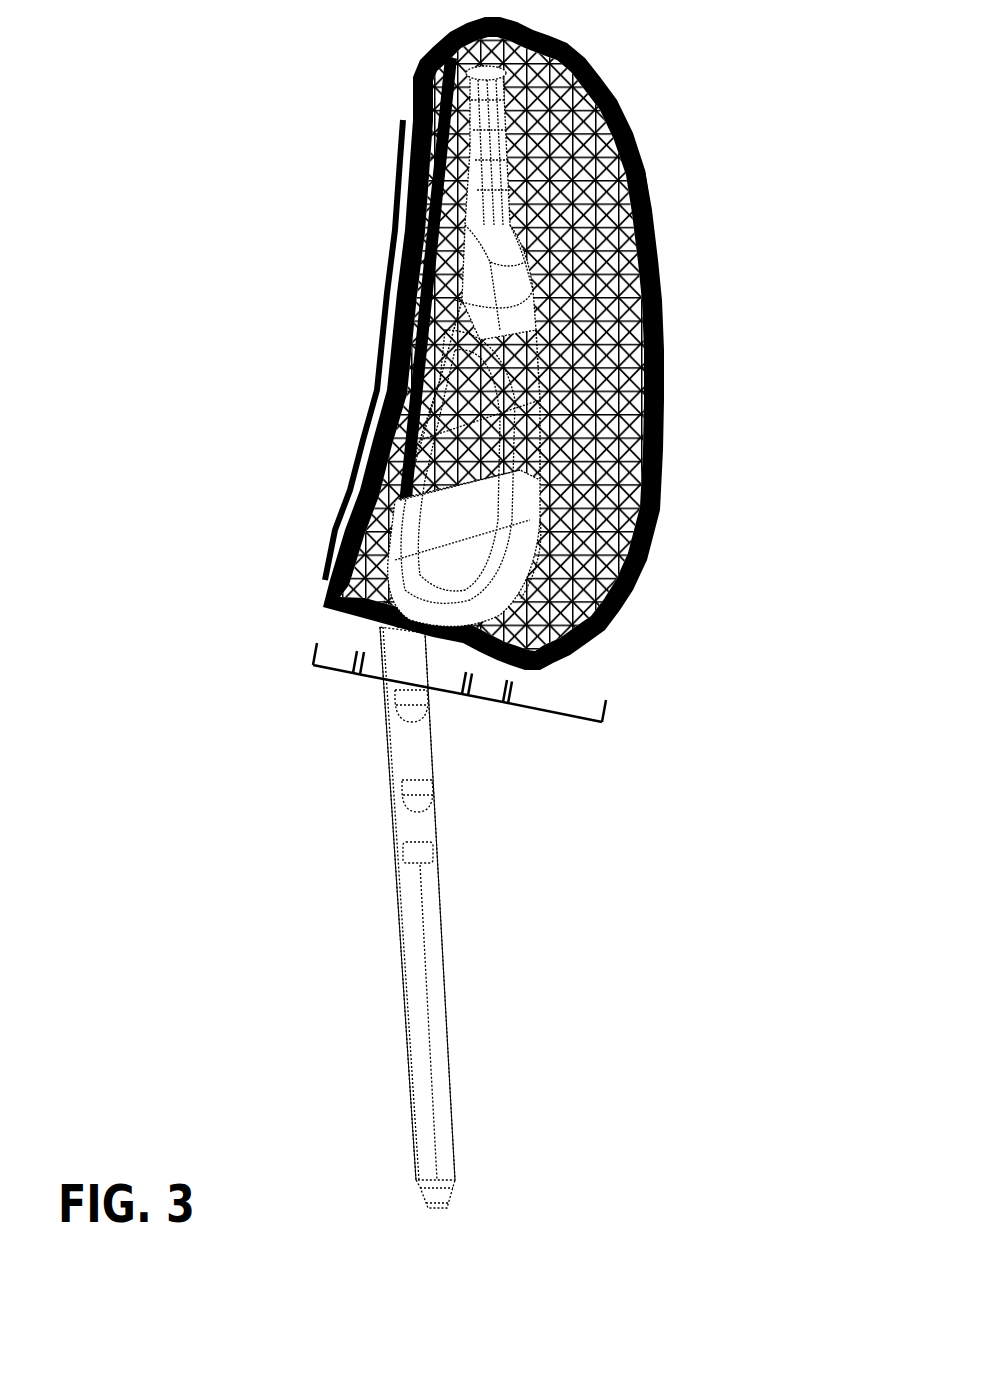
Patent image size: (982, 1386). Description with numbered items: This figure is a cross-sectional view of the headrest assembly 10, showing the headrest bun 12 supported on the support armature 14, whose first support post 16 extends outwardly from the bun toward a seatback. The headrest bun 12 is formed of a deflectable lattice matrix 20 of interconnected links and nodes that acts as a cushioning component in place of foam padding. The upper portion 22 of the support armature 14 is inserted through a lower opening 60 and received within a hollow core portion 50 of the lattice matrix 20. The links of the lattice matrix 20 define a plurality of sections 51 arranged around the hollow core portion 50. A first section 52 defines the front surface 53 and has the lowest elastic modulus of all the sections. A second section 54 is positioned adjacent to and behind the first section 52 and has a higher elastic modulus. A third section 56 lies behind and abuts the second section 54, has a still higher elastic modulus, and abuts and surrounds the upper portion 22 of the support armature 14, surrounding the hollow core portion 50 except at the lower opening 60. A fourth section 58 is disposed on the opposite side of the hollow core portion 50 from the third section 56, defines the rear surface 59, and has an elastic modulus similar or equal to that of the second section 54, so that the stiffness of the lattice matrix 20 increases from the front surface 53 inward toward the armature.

The headrest assembly 10 is at (690, 85).
The headrest bun 12 is at (702, 150).
The support armature 14 is at (345, 877).
The first support post 16 is at (430, 913).
The lattice matrix 20 is at (698, 205).
The upper portion 22 is at (470, 385).
The hollow core portion 50 is at (455, 172).
The plurality of sections 51 is at (552, 752).
The first section 52 is at (573, 717).
The front surface 53 is at (662, 452).
The second section 54 is at (487, 700).
The third section 56 is at (442, 693).
The fourth section 58 is at (330, 670).
The rear surface 59 is at (393, 353).
The lower opening 60 is at (362, 673).